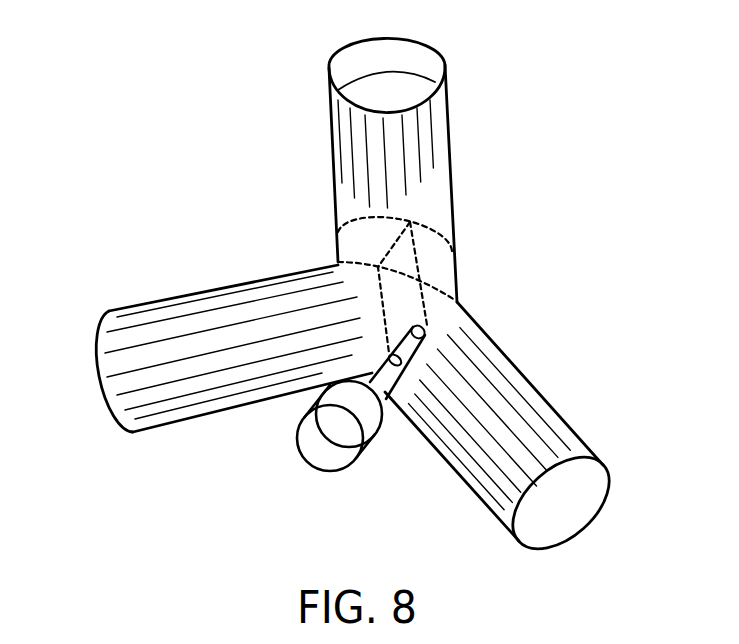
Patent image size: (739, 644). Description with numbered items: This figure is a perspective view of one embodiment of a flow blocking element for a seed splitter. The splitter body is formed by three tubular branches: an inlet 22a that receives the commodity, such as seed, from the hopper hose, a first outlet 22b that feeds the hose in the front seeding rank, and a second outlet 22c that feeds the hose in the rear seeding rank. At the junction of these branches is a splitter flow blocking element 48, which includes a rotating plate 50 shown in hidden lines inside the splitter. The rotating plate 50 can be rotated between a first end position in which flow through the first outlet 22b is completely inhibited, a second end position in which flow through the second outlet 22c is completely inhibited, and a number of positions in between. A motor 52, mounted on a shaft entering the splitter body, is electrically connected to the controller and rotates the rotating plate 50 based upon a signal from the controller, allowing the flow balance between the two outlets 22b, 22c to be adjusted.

The inlet 22a is at (450, 117).
The first outlet 22b is at (142, 302).
The second outlet 22c is at (593, 450).
The splitter flow blocking element 48 is at (443, 325).
The rotating plate 50 is at (407, 267).
The motor 52 is at (313, 450).